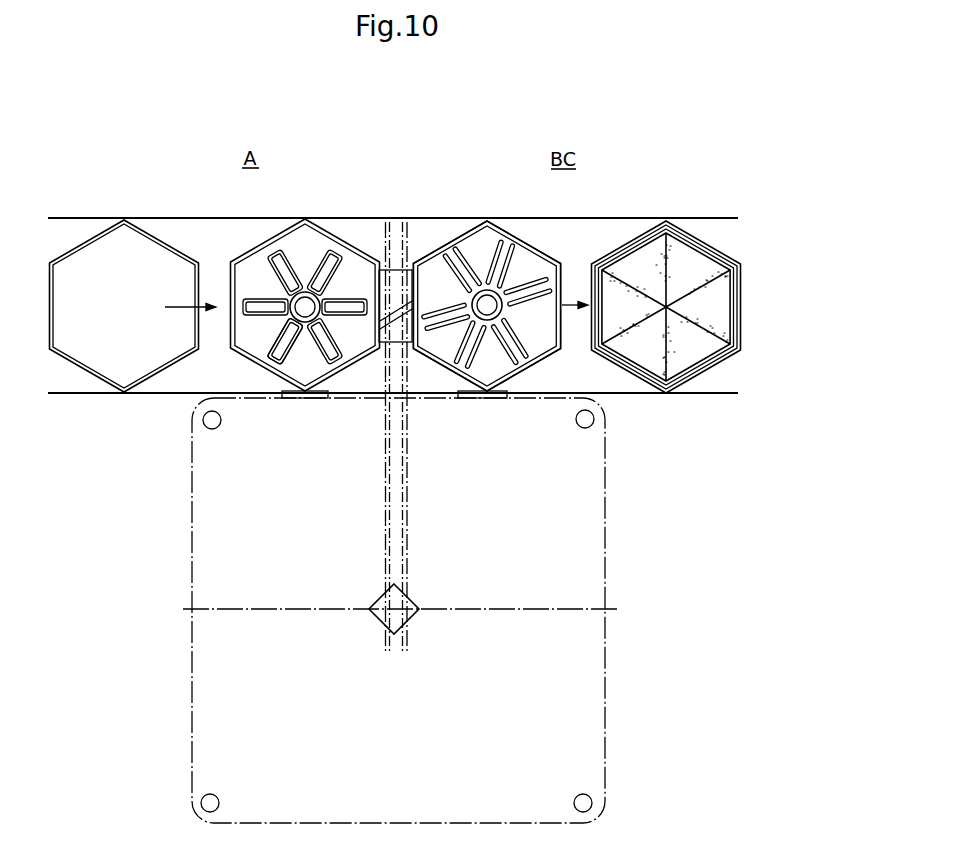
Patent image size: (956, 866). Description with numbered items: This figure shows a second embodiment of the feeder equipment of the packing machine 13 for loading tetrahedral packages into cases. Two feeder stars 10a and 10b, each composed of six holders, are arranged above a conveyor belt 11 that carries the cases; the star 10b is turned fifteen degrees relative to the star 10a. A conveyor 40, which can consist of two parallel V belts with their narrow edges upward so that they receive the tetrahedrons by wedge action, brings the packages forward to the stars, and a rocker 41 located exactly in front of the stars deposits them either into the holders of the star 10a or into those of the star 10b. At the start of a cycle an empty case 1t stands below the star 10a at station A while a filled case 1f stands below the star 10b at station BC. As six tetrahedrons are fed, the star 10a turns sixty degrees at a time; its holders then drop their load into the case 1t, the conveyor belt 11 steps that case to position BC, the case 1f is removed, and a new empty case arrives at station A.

The conveyor belt for cases 11 is at (189, 221).
The empty case 1t is at (238, 263).
The feeder star 10a is at (264, 235).
The conveyor 40 is at (406, 517).
The rocker 41 is at (398, 284).
The feeder star 10b is at (524, 232).
The filled case 1f is at (548, 258).
The packing machine 13 is at (585, 577).